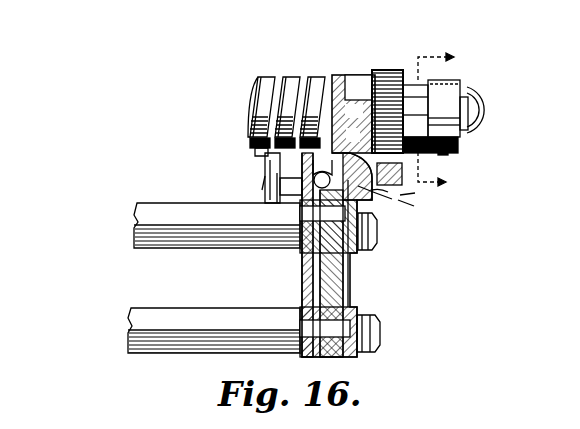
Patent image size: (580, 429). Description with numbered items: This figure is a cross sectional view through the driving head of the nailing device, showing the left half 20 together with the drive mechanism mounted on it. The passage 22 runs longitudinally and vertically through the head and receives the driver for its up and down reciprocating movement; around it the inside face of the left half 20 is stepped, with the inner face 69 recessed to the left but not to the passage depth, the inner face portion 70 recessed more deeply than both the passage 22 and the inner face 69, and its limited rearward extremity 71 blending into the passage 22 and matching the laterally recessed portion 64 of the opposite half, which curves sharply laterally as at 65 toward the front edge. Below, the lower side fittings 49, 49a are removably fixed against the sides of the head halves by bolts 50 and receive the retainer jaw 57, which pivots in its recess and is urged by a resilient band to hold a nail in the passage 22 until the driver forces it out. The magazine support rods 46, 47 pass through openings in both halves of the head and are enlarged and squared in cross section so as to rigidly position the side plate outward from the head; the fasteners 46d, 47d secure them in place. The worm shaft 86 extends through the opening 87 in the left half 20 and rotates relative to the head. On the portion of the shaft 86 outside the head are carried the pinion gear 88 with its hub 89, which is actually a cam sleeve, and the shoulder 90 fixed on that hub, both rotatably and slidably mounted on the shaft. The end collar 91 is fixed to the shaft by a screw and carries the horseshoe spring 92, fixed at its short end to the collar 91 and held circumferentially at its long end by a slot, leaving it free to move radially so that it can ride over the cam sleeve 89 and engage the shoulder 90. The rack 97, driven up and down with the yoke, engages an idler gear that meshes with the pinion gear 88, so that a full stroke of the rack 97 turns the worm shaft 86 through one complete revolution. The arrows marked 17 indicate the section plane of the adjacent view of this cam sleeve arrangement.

The worm shaft 86 is at (272, 77).
The opening 87 is at (284, 79).
The left half 20 is at (338, 76).
The inner face portion 70 is at (355, 111).
The rearward extremity 71 is at (356, 135).
The pinion gear 88 is at (386, 70).
The hub 89 is at (416, 88).
The shoulder 90 is at (410, 92).
The end collar 91 is at (450, 93).
The horseshoe spring 92 is at (488, 112).
The section line 17- 17 is at (451, 122).
The rack 97 is at (403, 181).
The inner face 69 is at (385, 197).
The lower side fitting 49 is at (418, 193).
The bolt 50 is at (416, 206).
The bolt 46d is at (379, 233).
The bolt 47d is at (383, 329).
The curved portion 65 is at (256, 150).
The laterally recessed portion 64 is at (283, 170).
The lower side fitting 49a is at (263, 178).
The passage 22 is at (287, 182).
The retainer jaw 57 is at (293, 198).
The magazine support rod 47 is at (170, 243).
The magazine support rod 46 is at (168, 347).